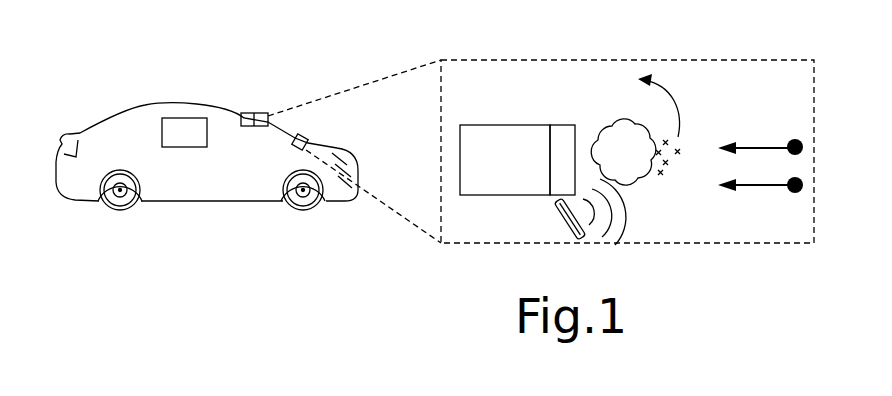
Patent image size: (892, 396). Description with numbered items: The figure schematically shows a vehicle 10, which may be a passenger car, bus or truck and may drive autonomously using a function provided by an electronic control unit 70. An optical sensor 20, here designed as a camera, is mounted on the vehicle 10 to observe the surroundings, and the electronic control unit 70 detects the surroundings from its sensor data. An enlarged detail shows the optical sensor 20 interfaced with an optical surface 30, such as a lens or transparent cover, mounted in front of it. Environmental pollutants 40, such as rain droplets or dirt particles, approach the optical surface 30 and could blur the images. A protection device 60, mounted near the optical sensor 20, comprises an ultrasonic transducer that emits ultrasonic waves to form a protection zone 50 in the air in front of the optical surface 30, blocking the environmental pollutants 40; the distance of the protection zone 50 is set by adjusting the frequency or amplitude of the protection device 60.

The vehicle 10 is at (142, 96).
The optical sensor 20 is at (250, 113).
The optical surface 30 is at (562, 125).
The environmental pollutants 40 is at (788, 138).
The protection zone 50 is at (637, 182).
The protection device 60 is at (308, 140).
The electronic control unit 70 is at (192, 118).